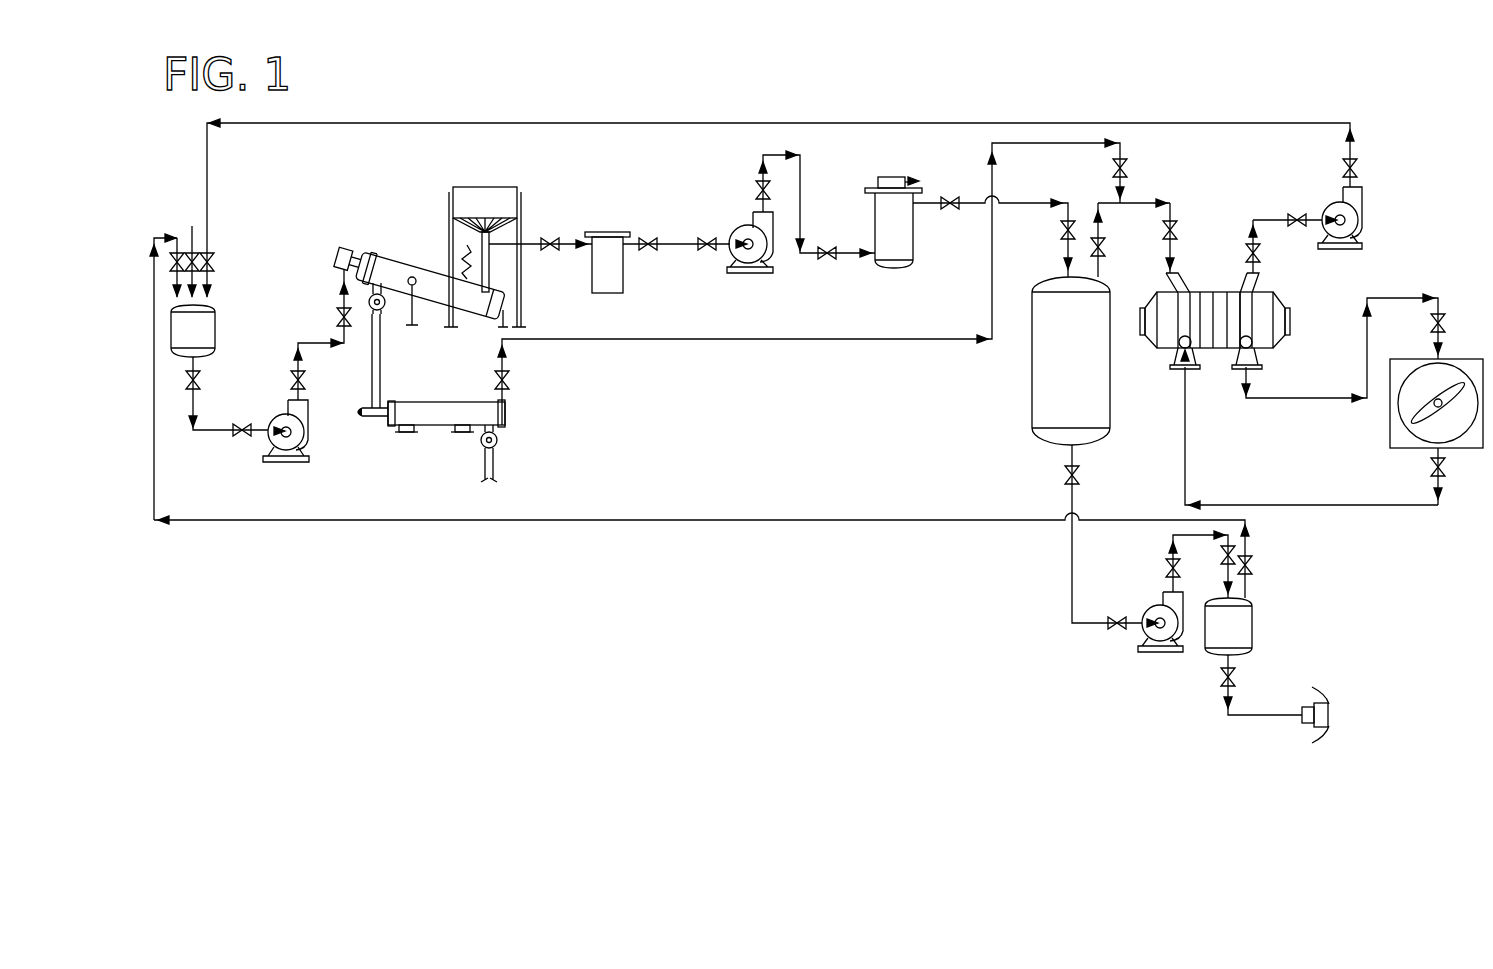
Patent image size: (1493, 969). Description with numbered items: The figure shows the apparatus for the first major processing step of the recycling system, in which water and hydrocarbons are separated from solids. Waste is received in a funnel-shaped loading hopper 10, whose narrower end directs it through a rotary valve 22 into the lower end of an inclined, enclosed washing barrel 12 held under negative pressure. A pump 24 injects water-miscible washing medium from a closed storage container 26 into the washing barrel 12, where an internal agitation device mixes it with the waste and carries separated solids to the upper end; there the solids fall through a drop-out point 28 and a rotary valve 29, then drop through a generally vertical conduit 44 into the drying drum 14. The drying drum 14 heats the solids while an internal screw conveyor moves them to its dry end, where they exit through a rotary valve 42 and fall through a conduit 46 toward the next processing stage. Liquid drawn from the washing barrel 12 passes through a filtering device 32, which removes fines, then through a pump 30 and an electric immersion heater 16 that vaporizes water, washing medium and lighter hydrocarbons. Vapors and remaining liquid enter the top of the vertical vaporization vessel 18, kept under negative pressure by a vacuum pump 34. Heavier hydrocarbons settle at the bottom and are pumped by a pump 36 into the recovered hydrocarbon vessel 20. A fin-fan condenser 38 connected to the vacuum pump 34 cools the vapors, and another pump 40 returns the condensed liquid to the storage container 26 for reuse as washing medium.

The loading hopper 10 is at (487, 187).
The washing barrel 12 is at (386, 250).
The drying drum 14 is at (437, 426).
The electric immersion heater 16 is at (873, 220).
The vaporization vessel 18 is at (1032, 368).
The recovered hydrocarbon vessel 20 is at (1253, 627).
The rotary valve 22 is at (490, 264).
The pump 24 is at (302, 440).
The storage container 26 is at (216, 318).
The drop-out point 28 is at (388, 262).
The rotary valve 29 is at (384, 306).
The pump 30 is at (740, 228).
The filtering device 32 is at (624, 274).
The vacuum pump 34 is at (1288, 322).
The pump 36 is at (1145, 633).
The condenser 38 is at (1404, 448).
The pump 40 is at (1338, 194).
The rotary valve 42 is at (498, 440).
The conduit 44 is at (382, 366).
The conduit 46 is at (498, 464).